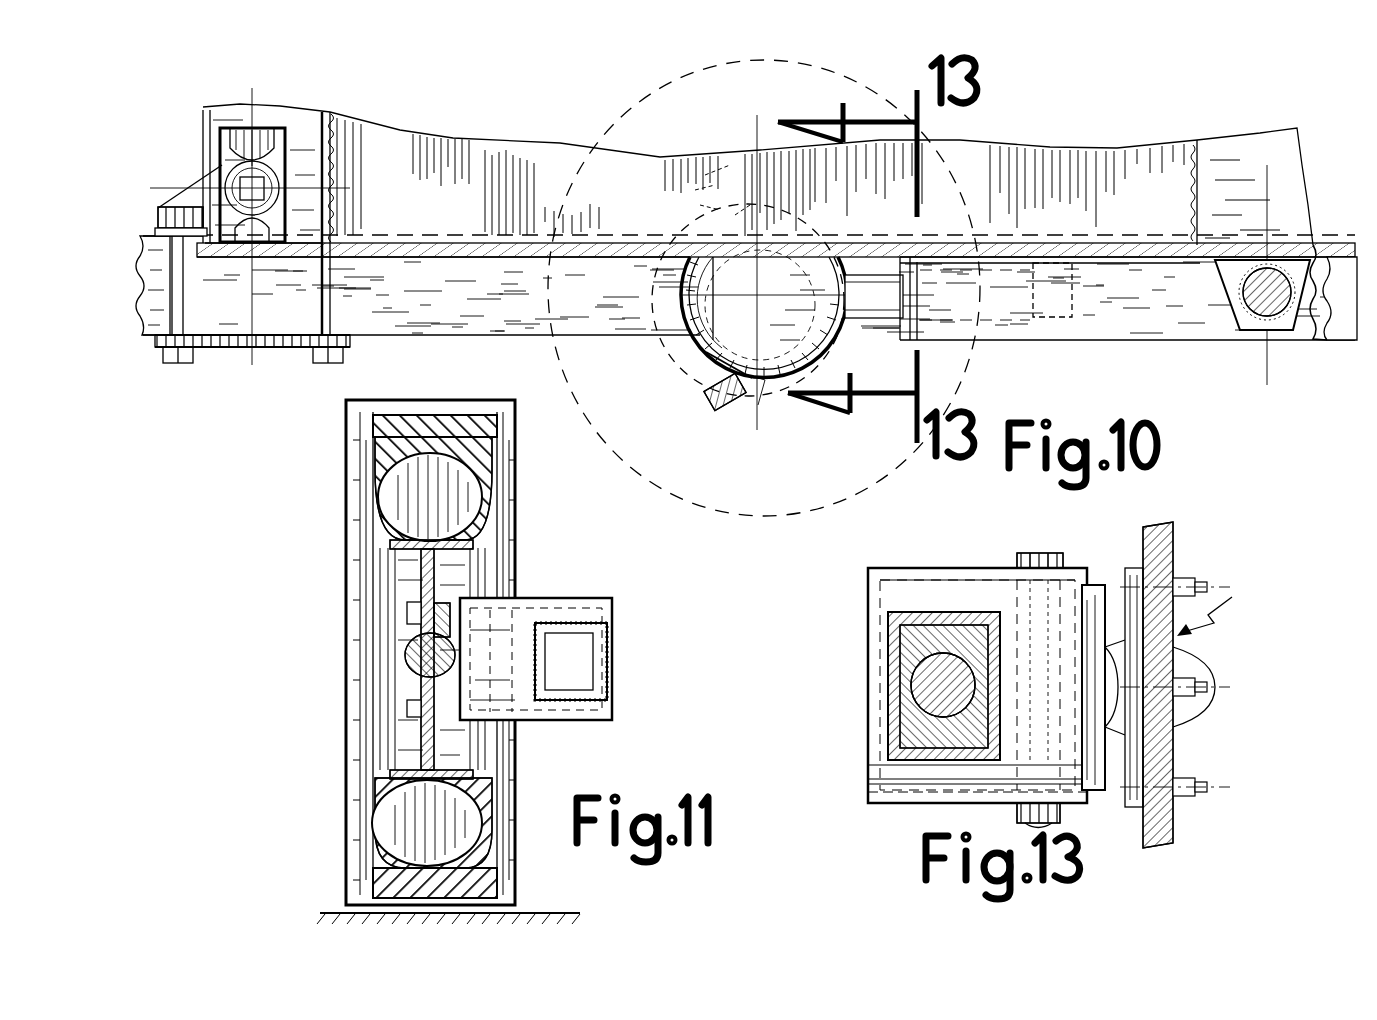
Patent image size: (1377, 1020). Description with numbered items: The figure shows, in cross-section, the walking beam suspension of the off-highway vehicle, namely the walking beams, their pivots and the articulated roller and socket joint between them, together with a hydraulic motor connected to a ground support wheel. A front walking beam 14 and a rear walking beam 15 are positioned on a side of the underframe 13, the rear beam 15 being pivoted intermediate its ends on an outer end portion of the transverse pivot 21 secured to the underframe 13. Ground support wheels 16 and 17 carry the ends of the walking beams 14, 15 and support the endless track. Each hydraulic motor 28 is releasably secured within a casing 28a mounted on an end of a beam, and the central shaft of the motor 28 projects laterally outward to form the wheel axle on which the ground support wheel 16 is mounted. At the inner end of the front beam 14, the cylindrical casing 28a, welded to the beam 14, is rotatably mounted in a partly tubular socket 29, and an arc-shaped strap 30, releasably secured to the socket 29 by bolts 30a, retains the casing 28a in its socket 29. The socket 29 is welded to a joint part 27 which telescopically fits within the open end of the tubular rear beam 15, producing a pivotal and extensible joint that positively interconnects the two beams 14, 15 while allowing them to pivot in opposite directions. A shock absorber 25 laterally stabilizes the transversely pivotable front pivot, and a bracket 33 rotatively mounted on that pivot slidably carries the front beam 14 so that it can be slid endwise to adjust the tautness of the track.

In FIG. 10, the underframe 13 is at (1309, 172).
In FIG. 10, the front walking beam 14 is at (408, 278).
In FIG. 11, the front walking beam 14 is at (610, 635).
In FIG. 10, the rear walking beam 15 is at (1106, 293).
In FIG. 13, the rear walking beam 15 is at (870, 633).
In FIG. 11, the ground support wheel 16 is at (343, 576).
In FIG. 10, the ground support wheel 17 is at (978, 358).
In FIG. 10, the transverse pivot 21 is at (1240, 318).
In FIG. 10, the shock absorber 25 is at (287, 178).
In FIG. 10, the joint part 27 is at (885, 285).
In FIG. 13, the joint part 27 is at (943, 670).
In FIG. 10, the hydraulic motor 28 is at (690, 305).
In FIG. 13, the hydraulic motor 28 is at (1087, 590).
In FIG. 10, the casing 28a is at (755, 378).
In FIG. 11, the casing 28a is at (530, 622).
In FIG. 13, the casing 28a is at (1048, 605).
In FIG. 10, the socket 29 is at (705, 330).
In FIG. 13, the socket 29 is at (892, 625).
In FIG. 10, the strap 30 is at (705, 395).
In FIG. 13, the strap 30 is at (1023, 593).
In FIG. 10, the bolt 30a is at (712, 397).
In FIG. 13, the bolt 30a is at (1030, 555).
In FIG. 10, the bracket 33 is at (192, 182).